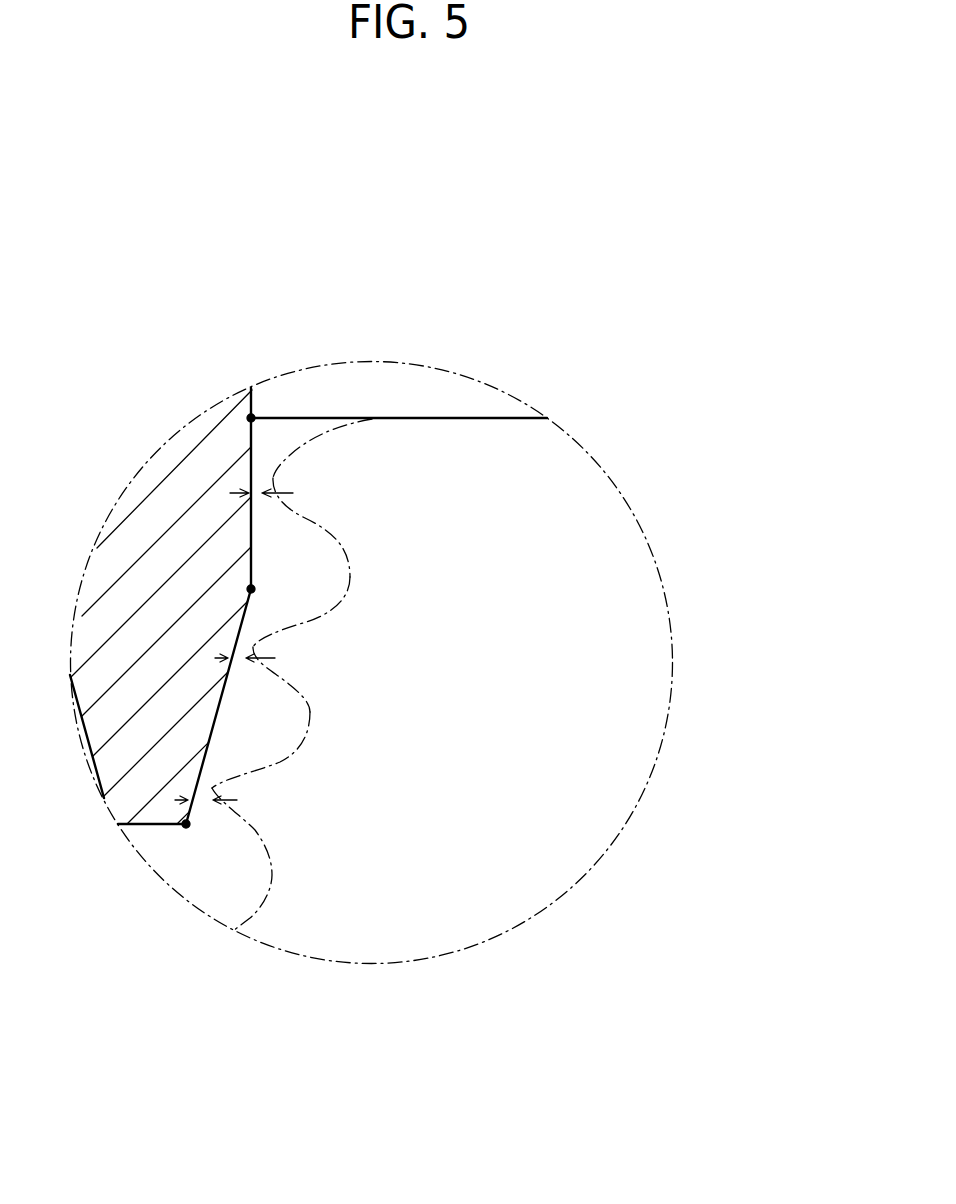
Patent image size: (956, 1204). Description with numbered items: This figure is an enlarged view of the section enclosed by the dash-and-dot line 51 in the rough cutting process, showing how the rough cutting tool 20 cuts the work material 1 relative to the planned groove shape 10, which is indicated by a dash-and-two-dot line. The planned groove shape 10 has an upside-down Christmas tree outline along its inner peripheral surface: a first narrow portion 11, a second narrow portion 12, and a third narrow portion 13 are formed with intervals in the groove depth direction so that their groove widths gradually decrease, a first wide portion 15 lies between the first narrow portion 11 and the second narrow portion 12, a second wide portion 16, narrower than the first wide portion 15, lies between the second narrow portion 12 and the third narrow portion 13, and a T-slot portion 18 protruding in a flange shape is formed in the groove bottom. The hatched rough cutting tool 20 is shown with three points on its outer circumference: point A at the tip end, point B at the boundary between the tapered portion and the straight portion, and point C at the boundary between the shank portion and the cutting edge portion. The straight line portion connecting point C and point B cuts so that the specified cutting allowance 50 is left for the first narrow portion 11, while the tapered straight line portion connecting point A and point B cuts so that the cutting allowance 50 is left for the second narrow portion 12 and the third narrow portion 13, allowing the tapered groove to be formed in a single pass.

The work material 1 is at (350, 418).
The planned groove shape 10 is at (265, 903).
The first narrow portion 11 is at (278, 478).
The second narrow portion 12 is at (258, 647).
The third narrow portion 13 is at (217, 788).
The first wide portion 15 is at (355, 577).
The second wide portion 16 is at (315, 712).
The T-slot portion 18 is at (277, 875).
The rough cutting tool 20 is at (172, 484).
The cutting allowance 50 is at (257, 499).
The dash-and-dot line 51 is at (507, 393).
The point A is at (186, 829).
The point B is at (256, 589).
The point C is at (256, 416).